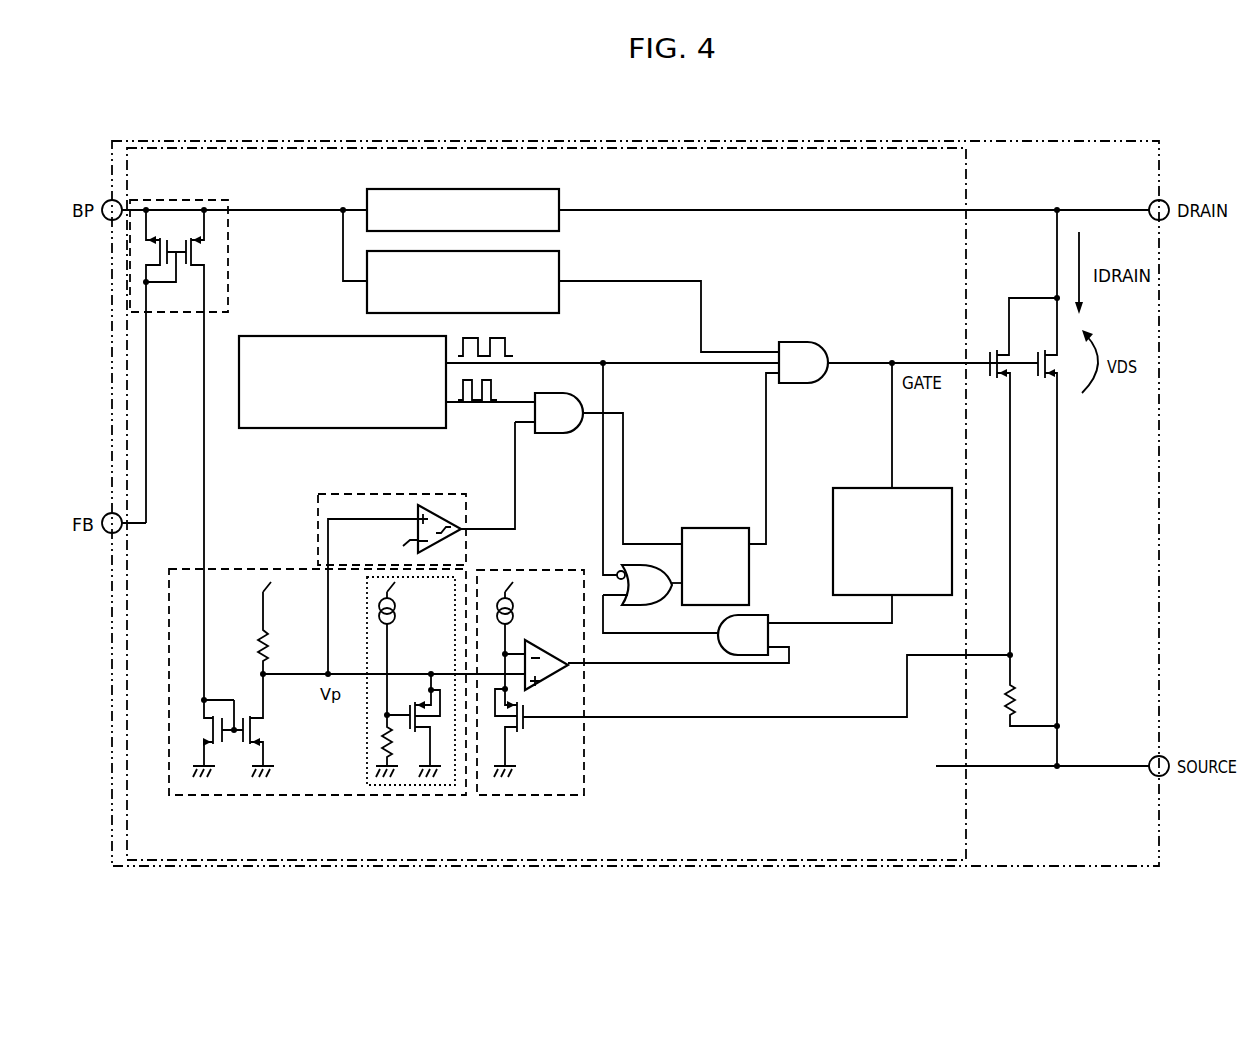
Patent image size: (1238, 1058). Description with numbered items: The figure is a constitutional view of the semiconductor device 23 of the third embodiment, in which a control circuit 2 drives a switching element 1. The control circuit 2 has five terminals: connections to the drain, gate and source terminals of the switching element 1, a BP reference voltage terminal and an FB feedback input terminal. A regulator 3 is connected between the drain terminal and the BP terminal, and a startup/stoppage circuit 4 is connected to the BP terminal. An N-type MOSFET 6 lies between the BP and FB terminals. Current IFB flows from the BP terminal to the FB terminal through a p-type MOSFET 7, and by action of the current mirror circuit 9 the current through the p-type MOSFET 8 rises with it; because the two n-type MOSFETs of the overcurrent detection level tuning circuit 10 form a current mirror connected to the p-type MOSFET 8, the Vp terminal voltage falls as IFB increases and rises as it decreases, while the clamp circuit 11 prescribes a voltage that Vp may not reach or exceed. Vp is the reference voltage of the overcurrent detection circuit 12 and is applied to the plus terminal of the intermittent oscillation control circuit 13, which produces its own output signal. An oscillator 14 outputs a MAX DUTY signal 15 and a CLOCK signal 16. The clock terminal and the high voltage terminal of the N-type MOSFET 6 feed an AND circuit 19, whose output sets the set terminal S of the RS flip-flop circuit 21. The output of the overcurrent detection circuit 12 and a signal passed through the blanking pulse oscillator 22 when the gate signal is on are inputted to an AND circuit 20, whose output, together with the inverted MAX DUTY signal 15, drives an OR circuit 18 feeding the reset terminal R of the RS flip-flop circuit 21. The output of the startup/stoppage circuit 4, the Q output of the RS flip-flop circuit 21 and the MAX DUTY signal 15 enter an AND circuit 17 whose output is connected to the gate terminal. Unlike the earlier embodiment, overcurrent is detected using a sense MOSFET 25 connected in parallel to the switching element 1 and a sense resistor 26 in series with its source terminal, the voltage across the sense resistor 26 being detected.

The switching element 1 is at (1045, 377).
The control circuit 2 is at (967, 197).
The regulator 3 is at (560, 196).
The startup/stoppage circuit 4 is at (560, 258).
The N-type MOSFET 6 is at (198, 730).
The p-type MOSFET 7 is at (143, 250).
The p-type MOSFET 8 is at (203, 248).
The current mirror circuit 9 is at (212, 200).
The overcurrent detection level tuning circuit 10 is at (171, 795).
The clamp circuit 11 is at (455, 788).
The overcurrent detection circuit 12 is at (584, 788).
The intermittent oscillation control circuit 13 is at (316, 530).
The oscillator 14 is at (322, 336).
The MAX DUTY signal 15 is at (518, 352).
The CLOCK signal 16 is at (500, 394).
The AND circuit 17 is at (797, 342).
The OR circuit 18 is at (660, 605).
The AND circuit 19 is at (570, 433).
The AND circuit 20 is at (768, 615).
The RS flip-flop circuit 21 is at (706, 528).
The blanking pulse oscillator 22 is at (910, 488).
The semiconductor device 23 is at (1130, 163).
The sense MOSFET 25 is at (993, 377).
The sense resistor 26 is at (1017, 698).